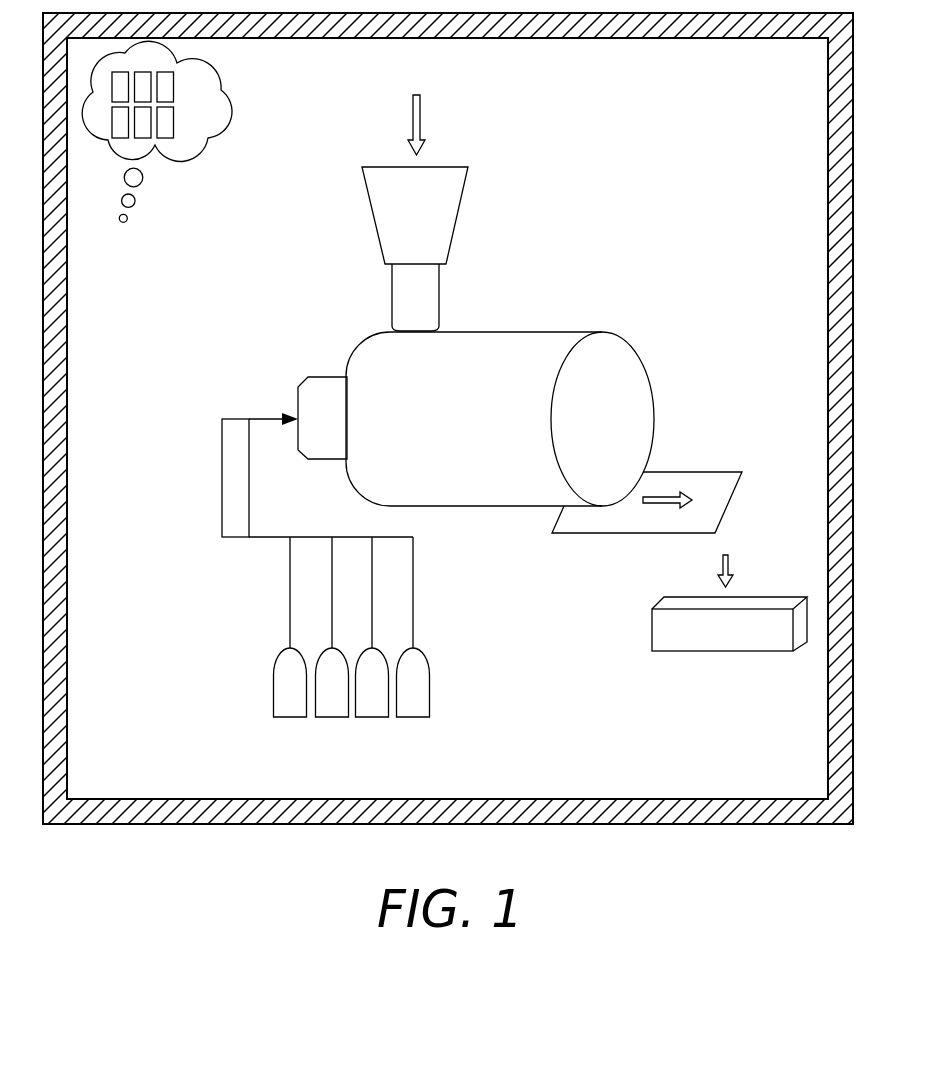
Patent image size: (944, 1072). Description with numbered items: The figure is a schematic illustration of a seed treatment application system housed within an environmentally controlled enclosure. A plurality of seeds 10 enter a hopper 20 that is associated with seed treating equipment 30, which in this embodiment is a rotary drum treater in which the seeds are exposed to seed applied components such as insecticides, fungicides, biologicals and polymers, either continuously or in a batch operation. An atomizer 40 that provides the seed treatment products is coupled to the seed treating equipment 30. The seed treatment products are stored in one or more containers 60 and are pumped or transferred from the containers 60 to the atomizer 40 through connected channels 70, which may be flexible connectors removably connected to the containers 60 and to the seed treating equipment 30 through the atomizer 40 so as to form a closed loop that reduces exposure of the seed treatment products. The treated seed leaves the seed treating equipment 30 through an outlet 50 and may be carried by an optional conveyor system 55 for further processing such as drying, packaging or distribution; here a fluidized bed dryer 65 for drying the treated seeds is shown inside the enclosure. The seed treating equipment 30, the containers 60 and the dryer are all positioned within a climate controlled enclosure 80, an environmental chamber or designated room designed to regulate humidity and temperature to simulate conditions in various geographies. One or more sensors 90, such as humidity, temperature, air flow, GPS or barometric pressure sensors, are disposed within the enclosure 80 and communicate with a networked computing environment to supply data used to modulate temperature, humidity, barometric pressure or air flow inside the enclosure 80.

The plurality of seeds 10 is at (421, 118).
The hopper 20 is at (447, 218).
The seed treating equipment 30 is at (557, 330).
The atomizer 40 is at (298, 392).
The outlet 50 is at (655, 417).
The conveyor system 55 is at (727, 480).
The containers 60 is at (422, 687).
The fluidized bed dryer 65 is at (660, 629).
The connected channels 70 is at (222, 477).
The climate controlled enclosure 80 is at (615, 800).
The sensors 90 is at (173, 195).